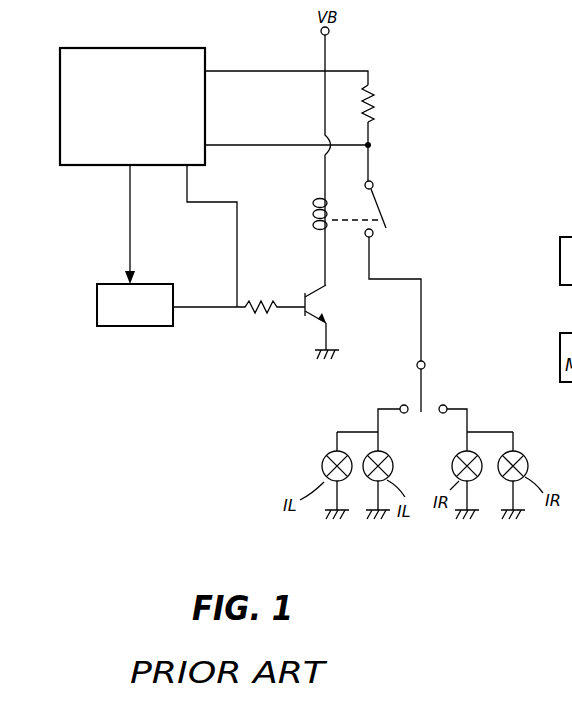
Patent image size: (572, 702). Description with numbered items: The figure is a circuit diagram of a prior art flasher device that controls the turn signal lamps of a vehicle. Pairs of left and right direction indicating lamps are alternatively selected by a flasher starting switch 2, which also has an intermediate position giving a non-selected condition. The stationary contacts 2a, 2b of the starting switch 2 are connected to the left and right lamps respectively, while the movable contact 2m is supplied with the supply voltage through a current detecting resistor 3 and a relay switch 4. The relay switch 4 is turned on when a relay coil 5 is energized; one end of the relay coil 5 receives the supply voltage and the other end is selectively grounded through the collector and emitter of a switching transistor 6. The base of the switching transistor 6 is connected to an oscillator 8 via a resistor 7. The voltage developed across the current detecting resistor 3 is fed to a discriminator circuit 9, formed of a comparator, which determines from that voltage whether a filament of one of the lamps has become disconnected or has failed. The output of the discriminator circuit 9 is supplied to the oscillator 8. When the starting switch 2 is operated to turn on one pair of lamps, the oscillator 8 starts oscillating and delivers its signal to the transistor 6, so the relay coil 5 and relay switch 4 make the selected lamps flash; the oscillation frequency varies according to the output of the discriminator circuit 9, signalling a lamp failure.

The discriminator circuit 9 is at (158, 49).
The current detecting resistor 3 is at (372, 107).
The relay coil 5 is at (312, 215).
The relay switch 4 is at (386, 216).
The switching transistor 6 is at (322, 307).
The resistor 7 is at (259, 318).
The oscillator 8 is at (93, 322).
The flasher starting switch 2 is at (433, 379).
The movable contact 2m is at (428, 370).
The stationary contact 2a is at (400, 406).
The stationary contact 2b is at (448, 406).